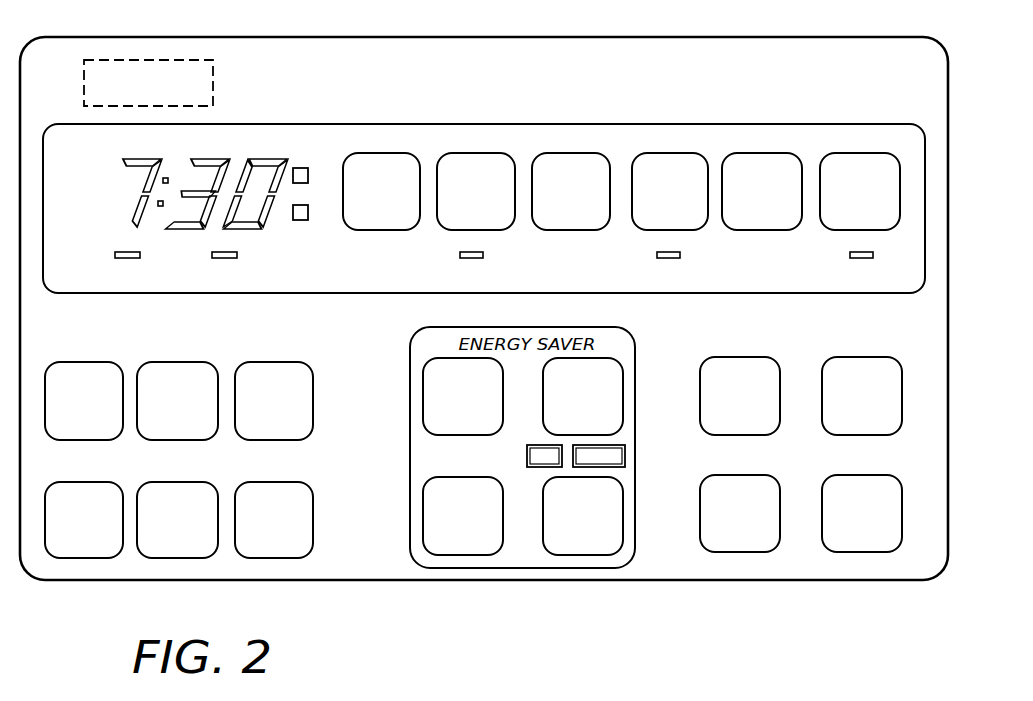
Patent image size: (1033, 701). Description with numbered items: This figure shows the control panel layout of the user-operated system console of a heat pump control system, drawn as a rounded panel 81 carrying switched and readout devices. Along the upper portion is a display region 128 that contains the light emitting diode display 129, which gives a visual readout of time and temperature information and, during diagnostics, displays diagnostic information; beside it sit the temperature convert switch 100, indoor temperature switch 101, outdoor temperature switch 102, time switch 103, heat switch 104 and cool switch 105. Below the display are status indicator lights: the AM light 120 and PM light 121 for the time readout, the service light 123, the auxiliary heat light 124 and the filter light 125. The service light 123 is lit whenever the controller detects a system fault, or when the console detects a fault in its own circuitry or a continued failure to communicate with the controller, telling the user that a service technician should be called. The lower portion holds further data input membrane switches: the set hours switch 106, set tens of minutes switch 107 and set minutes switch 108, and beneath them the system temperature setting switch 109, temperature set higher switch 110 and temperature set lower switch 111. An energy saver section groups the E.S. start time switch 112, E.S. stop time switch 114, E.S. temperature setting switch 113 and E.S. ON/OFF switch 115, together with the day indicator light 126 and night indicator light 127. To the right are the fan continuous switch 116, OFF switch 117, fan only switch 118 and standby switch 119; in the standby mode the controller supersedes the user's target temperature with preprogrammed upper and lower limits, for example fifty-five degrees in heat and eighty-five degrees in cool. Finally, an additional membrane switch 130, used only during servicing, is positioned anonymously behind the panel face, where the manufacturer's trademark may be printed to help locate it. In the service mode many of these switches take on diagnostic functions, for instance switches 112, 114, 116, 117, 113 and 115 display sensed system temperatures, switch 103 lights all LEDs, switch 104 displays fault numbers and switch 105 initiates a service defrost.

The thermostat control panel housing 81 is at (608, 37).
The temperature convert membrane switch 100 is at (362, 153).
The indoor temperature membrane switch 101 is at (463, 153).
The outdoor temperature membrane switch 102 is at (553, 153).
The time membrane switch 103 is at (655, 153).
The heat membrane switch 104 is at (745, 153).
The cool membrane switch 105 is at (843, 153).
The set hours membrane switch 106 is at (85, 362).
The set tens of minutes membrane switch 107 is at (178, 362).
The set minutes membrane switch 108 is at (280, 362).
The system temperature setting membrane switch 109 is at (78, 482).
The temperature set higher membrane switch 110 is at (175, 482).
The temperature set lower membrane switch 111 is at (275, 482).
The energy saver start time membrane switch 112 is at (423, 398).
The energy saver temperature setting membrane switch 113 is at (423, 500).
The energy saver stop time membrane switch 114 is at (617, 365).
The energy saver on/off membrane switch 115 is at (620, 491).
The fan continuous membrane switch 116 is at (745, 357).
The off membrane switch 117 is at (855, 357).
The fan only membrane switch 118 is at (752, 475).
The standby membrane switch 119 is at (880, 475).
The AM status indicator light 120 is at (126, 252).
The PM status indicator light 121 is at (220, 252).
The service indicator light 123 is at (460, 255).
The auxiliary heat status indicator light 124 is at (657, 255).
The filter status indicator light 125 is at (850, 255).
The day status indicator light 126 is at (527, 455).
The night status indicator light 127 is at (625, 452).
The display panel 128 is at (463, 123).
The light emitting diode display 129 is at (158, 151).
The hidden service membrane switch 130 is at (215, 106).